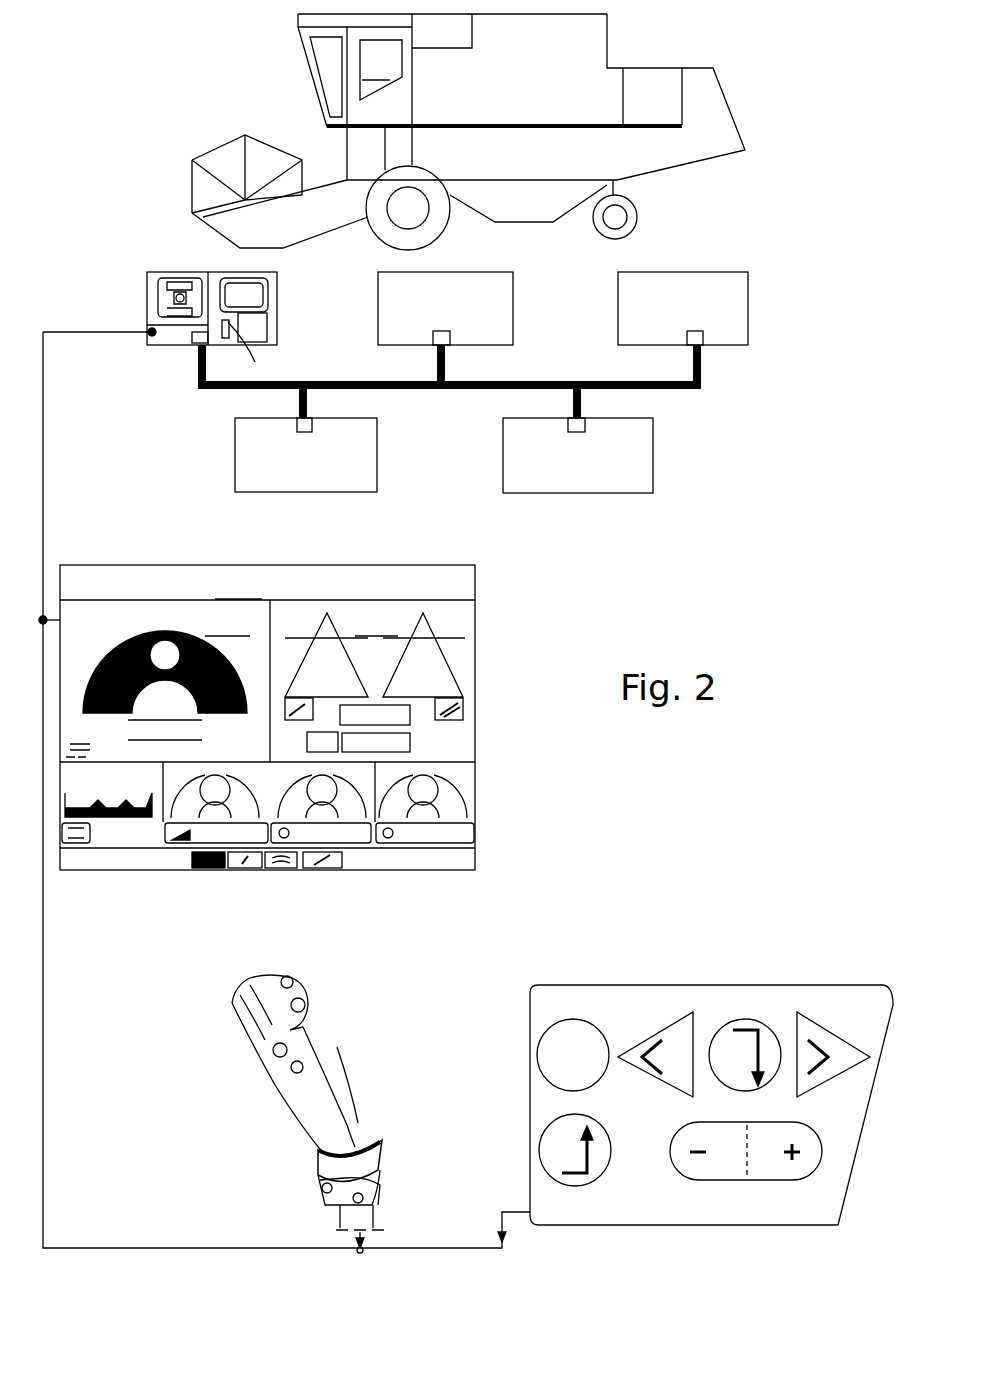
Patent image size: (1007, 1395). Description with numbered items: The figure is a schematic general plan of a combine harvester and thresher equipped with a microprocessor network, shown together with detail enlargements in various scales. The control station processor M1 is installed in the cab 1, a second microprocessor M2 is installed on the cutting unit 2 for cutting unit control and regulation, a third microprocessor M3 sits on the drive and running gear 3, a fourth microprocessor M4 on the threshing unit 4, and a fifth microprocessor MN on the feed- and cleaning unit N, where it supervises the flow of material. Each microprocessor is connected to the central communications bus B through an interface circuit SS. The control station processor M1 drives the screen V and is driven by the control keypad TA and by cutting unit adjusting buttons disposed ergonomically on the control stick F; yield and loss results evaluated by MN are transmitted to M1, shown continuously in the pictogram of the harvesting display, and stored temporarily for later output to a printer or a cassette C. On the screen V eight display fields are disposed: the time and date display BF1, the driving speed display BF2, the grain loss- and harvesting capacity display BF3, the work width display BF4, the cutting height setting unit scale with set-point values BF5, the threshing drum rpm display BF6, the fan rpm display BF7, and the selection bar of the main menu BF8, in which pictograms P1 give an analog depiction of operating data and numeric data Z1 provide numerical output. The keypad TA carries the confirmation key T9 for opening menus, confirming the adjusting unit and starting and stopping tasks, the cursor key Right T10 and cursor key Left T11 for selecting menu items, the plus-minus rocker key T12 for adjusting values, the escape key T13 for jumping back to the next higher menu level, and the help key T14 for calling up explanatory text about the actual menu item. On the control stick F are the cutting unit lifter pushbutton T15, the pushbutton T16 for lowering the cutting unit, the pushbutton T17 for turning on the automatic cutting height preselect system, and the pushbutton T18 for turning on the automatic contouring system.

The cab 1 is at (197, 272).
The cutting unit 2 is at (362, 418).
The drive and running gear 3 is at (458, 272).
The threshing unit 4 is at (622, 418).
The feed- and cleaning unit N is at (688, 272).
The cassette C is at (156, 320).
The screen V is at (253, 293).
The control keypad TA is at (257, 327).
The control station processor M1 is at (274, 336).
The interface circuit SS is at (208, 345).
The control stick F is at (290, 1178).
The bus B is at (218, 392).
The second microprocessor M2 is at (306, 455).
The third microprocessor M3 is at (445, 308).
The fourth microprocessor M4 is at (578, 455).
The fifth microprocessor MN is at (683, 308).
The numeric data Z1 is at (93, 541).
The pictograms P1 is at (180, 633).
The time and date display BF1 is at (165, 570).
The driving speed display BF2 is at (164, 647).
The grain loss- and harvesting capacity display BF3 is at (375, 682).
The work width display BF4 is at (140, 835).
The cutting height setting unit scale BF5 is at (240, 810).
The threshing drum rpm display BF6 is at (350, 812).
The fan rpm display BF7 is at (430, 817).
The selection bar of the main menu BF8 is at (302, 859).
The confirmation key T9 is at (747, 1020).
The cursor key Right T10 is at (823, 1037).
The cursor key Left T11 is at (675, 1030).
The ± rocker key T12 is at (760, 1168).
The escape key T13 is at (598, 1170).
The help key T14 is at (592, 1040).
The cutting unit lifter pushbutton T15 is at (293, 981).
The pushbutton for lowering the cutting unit T16 is at (305, 1005).
The pushbutton for automatic cutting height preselect system T17 is at (272, 1053).
The pushbutton for automatic contouring system T18 is at (290, 1072).